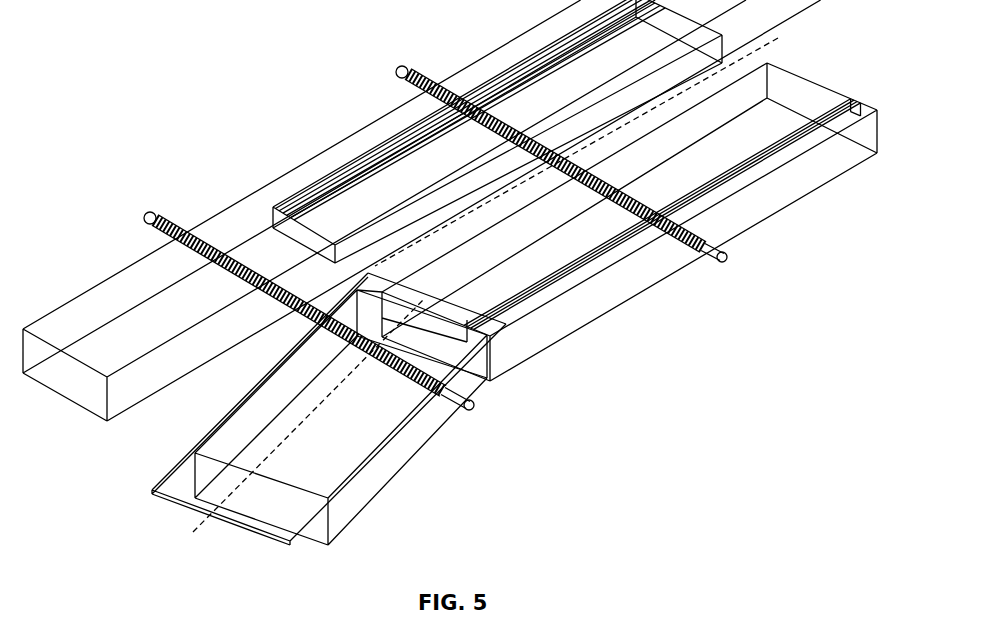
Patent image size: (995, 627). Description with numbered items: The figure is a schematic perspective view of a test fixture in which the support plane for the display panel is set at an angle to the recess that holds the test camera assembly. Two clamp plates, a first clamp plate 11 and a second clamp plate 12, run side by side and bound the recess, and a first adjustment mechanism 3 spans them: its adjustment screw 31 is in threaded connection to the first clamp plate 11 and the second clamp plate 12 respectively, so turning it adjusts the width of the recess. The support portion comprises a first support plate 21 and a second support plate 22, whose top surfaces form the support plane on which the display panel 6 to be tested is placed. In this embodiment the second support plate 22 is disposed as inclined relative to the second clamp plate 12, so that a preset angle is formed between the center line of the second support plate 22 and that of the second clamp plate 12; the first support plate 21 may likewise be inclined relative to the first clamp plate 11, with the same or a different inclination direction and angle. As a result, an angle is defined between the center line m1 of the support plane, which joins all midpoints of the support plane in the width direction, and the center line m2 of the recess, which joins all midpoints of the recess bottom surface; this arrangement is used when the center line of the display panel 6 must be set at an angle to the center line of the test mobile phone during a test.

The first adjustment mechanism 3 is at (149, 212).
The adjustment screw 31 is at (309, 311).
The display panel to be tested 6 is at (180, 487).
The first clamp plate 11 is at (703, 60).
The second clamp plate 12 is at (755, 85).
The first support plate 21 is at (117, 292).
The second support plate 22 is at (387, 467).
The center line of the support plane m1 is at (300, 430).
The center line of the recess m2 is at (595, 145).